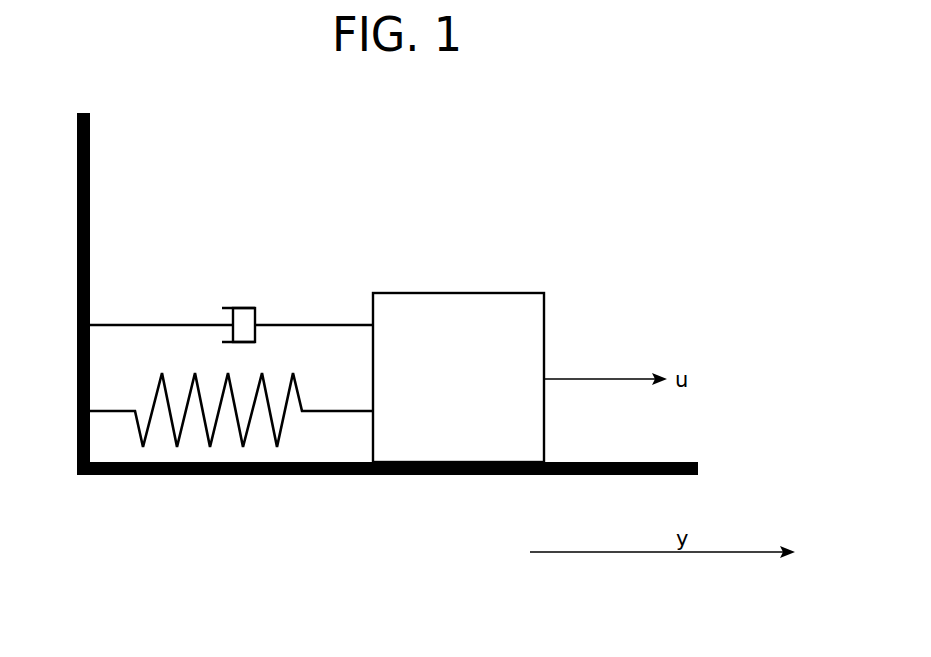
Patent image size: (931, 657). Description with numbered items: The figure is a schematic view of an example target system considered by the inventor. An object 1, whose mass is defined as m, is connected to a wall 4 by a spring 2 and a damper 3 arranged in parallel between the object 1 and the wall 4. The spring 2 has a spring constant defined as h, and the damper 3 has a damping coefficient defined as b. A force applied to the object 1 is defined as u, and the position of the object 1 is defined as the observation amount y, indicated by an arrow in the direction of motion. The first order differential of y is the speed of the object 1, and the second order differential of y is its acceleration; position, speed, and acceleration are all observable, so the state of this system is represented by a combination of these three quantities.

The object 1 is at (544, 337).
The spring 2 is at (298, 386).
The damper 3 is at (238, 308).
The wall 4 is at (90, 191).